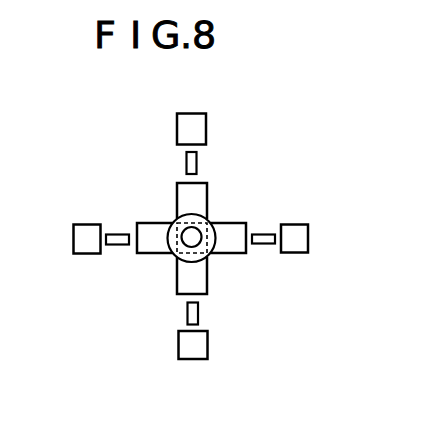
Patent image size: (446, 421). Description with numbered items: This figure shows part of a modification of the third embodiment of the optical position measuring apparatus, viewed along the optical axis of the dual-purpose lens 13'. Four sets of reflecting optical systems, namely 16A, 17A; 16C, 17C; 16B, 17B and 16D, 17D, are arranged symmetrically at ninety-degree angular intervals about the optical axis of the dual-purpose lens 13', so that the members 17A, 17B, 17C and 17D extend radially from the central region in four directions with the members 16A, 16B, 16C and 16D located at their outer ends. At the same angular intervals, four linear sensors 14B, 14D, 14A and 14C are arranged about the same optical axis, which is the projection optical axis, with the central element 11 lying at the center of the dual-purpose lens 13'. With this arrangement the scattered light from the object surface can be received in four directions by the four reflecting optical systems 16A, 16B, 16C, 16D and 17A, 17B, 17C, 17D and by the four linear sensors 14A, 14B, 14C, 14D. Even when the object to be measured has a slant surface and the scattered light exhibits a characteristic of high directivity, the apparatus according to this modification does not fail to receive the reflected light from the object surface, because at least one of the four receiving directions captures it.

The central shaft/pivot 11 is at (185, 231).
The dual-purpose lens 13′ is at (208, 221).
The linear sensor 14A is at (116, 234).
The linear sensor 14B is at (264, 234).
The linear sensor 14C is at (188, 310).
The linear sensor 14D is at (186, 160).
The reflecting optical system element 16A is at (295, 250).
The reflecting optical system element 16B is at (86, 247).
The reflecting optical system element 16C is at (206, 125).
The reflecting optical system element 16D is at (178, 345).
The reflecting optical system element 17A is at (232, 247).
The reflecting optical system element 17B is at (150, 247).
The reflecting optical system element 17C is at (207, 195).
The reflecting optical system element 17D is at (200, 277).